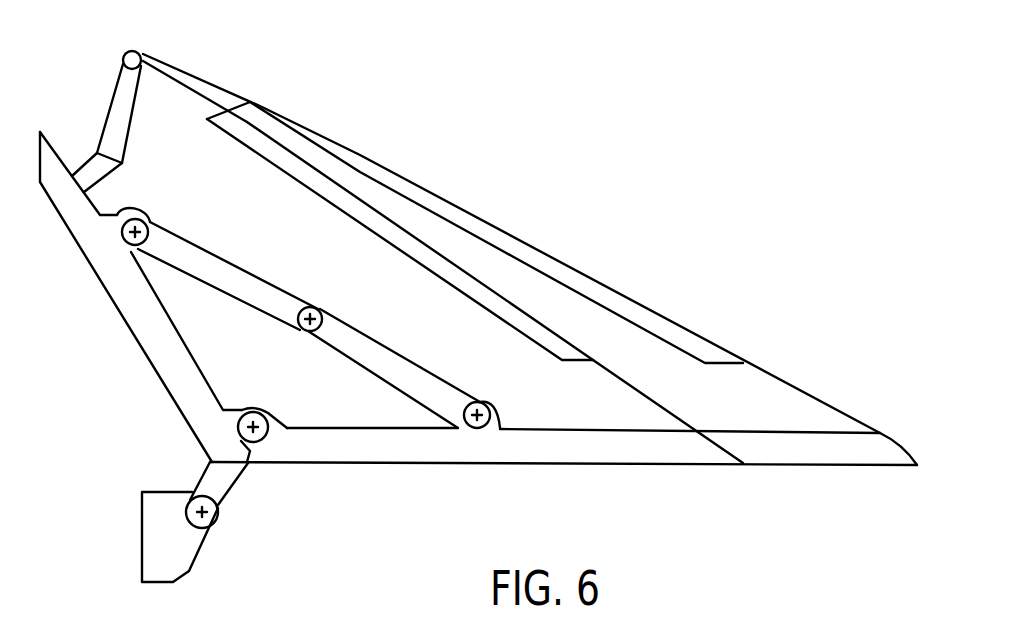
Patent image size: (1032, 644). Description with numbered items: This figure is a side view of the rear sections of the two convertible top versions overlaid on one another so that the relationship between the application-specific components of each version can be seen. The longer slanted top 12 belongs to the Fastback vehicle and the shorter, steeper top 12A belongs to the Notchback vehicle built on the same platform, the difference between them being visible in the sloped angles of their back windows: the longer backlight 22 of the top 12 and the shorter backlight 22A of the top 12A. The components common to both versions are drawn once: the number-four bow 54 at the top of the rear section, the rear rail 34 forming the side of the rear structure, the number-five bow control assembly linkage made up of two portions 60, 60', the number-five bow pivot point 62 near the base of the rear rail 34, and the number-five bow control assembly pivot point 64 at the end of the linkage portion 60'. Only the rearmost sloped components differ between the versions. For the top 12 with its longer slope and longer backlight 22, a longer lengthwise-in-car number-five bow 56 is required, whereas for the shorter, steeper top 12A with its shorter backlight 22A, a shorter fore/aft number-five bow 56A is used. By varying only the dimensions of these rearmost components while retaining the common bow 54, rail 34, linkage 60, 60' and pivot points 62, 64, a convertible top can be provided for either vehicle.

The convertible top 12 is at (205, 79).
The convertible top 12A is at (218, 100).
The backlight 22 is at (385, 182).
The backlight 22A is at (450, 266).
The rear rail 34 is at (165, 345).
The #4 bow 54 is at (127, 53).
The #5 bow 56 is at (887, 435).
The #5 bow 56A is at (733, 447).
The #5 bow control assembly linkage portion 60 is at (219, 288).
The #5 bow control assembly linkage portion 60' is at (394, 368).
The #5 bow pivot point 62 is at (250, 428).
The #5 bow control assembly pivot point 64 is at (485, 432).